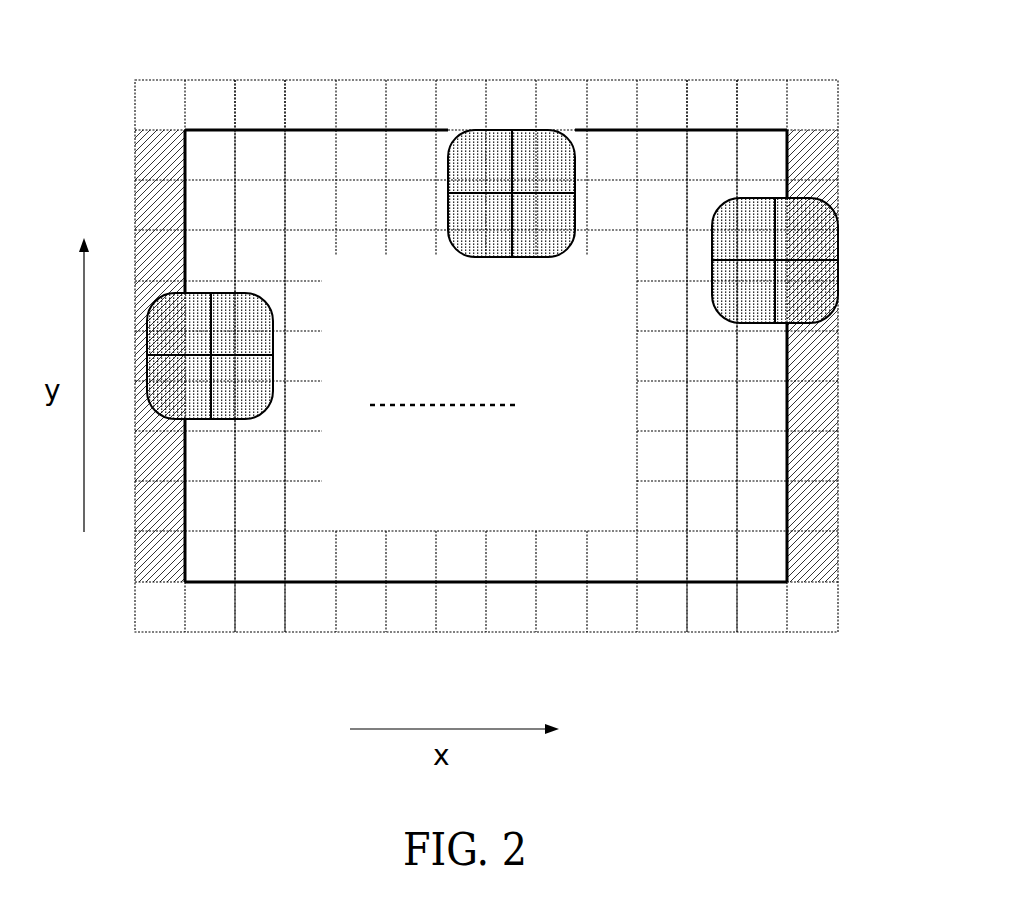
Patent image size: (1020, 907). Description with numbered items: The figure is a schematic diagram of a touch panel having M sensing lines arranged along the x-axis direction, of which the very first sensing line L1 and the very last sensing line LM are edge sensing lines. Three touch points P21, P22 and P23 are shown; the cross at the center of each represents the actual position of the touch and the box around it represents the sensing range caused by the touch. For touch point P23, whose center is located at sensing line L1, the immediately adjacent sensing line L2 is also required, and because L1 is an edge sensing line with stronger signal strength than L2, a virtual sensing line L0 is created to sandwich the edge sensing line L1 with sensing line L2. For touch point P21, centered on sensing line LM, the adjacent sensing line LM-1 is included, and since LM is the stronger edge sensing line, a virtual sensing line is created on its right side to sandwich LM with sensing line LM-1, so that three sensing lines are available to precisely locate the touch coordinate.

The touch point P21 is at (755, 213).
The touch point P22 is at (478, 155).
The touch point P23 is at (258, 320).
The virtual sensing line L0 is at (160, 567).
The sensing line L1 is at (217, 570).
The sensing line L2 is at (262, 570).
The sensing line LM-1 is at (712, 562).
The sensing line LM is at (763, 562).